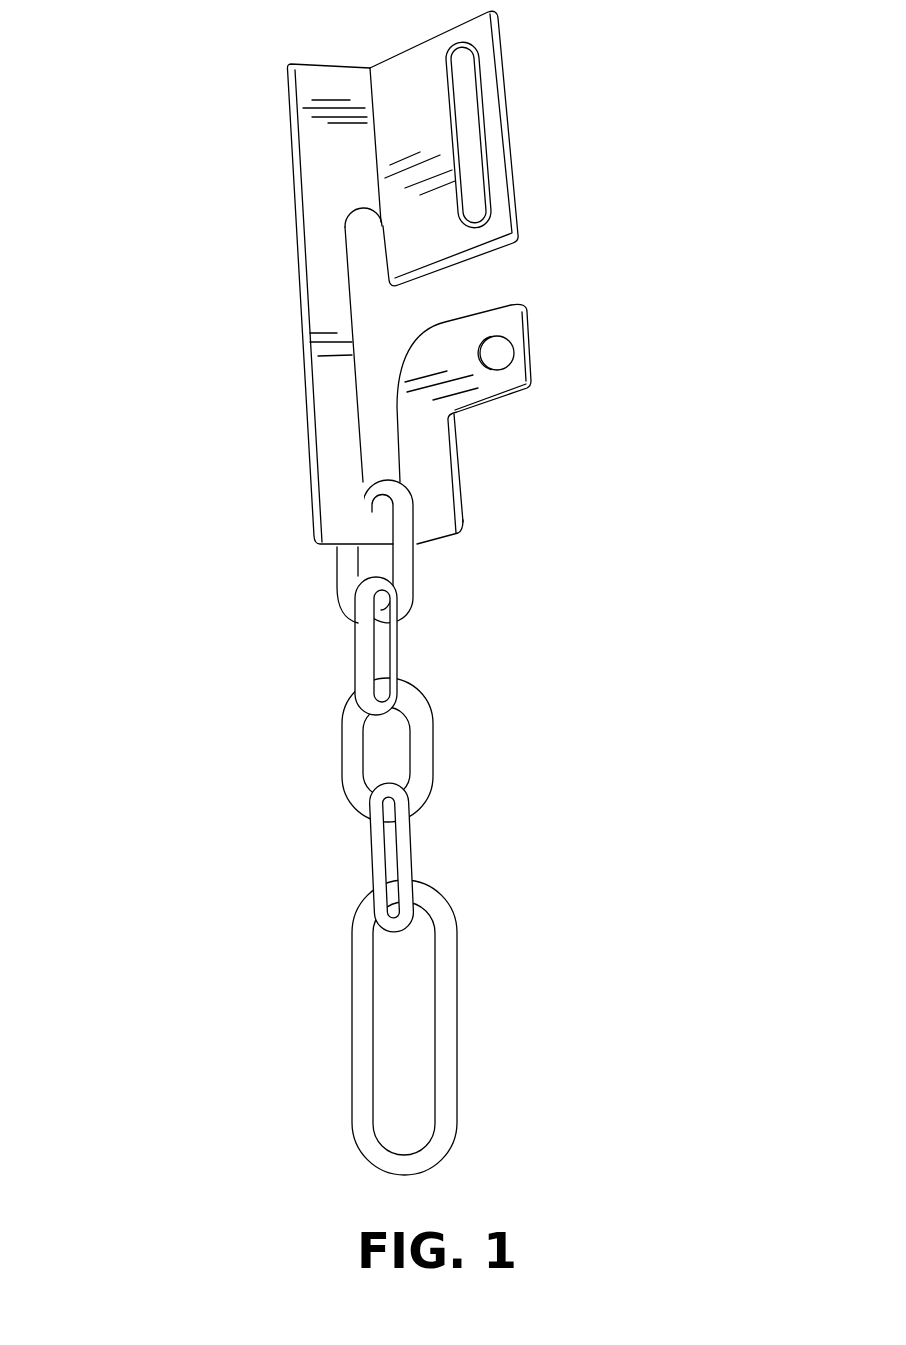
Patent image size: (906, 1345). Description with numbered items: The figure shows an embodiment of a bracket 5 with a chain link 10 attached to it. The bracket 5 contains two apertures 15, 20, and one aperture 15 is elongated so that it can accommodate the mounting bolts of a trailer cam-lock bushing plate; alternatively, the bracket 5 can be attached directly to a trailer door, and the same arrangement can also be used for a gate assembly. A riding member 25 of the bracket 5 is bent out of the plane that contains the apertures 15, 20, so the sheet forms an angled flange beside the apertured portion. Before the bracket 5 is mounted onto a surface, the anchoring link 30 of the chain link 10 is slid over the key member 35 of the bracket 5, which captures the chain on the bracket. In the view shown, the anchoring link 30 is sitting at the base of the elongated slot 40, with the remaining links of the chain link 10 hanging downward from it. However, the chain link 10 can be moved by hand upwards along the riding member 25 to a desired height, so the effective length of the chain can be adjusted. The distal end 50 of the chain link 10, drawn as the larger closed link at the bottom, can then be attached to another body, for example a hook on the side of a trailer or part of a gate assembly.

The bracket 5 is at (401, 593).
The chain link 10 is at (399, 827).
The aperture 15 is at (473, 110).
The aperture 20 is at (497, 352).
The riding member 25 is at (241, 304).
The anchoring link 30 is at (345, 569).
The key member 35 is at (563, 424).
The elongated slot 40 is at (367, 253).
The distal end 50 is at (452, 1052).